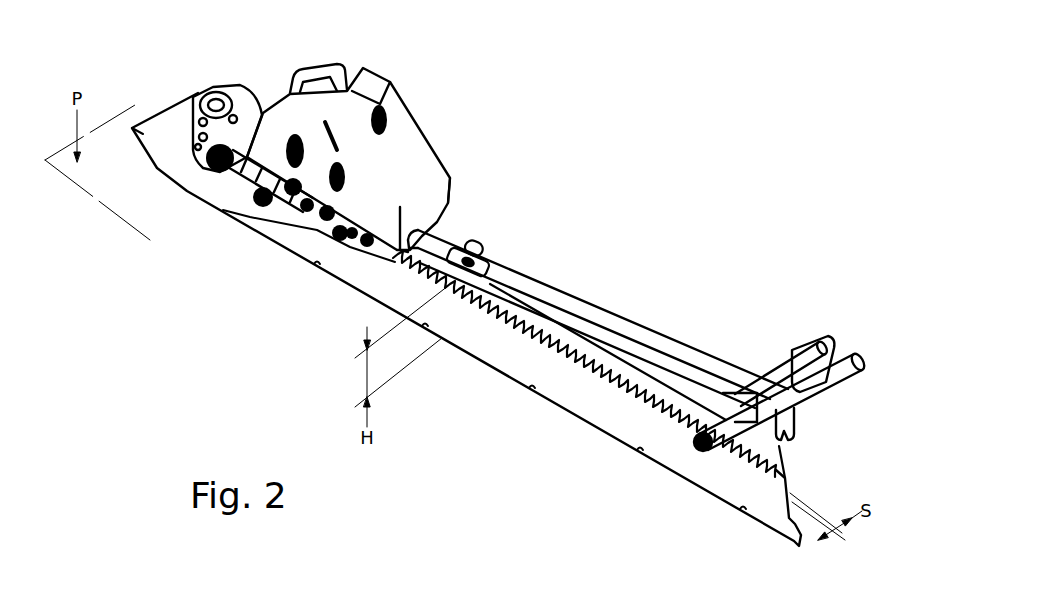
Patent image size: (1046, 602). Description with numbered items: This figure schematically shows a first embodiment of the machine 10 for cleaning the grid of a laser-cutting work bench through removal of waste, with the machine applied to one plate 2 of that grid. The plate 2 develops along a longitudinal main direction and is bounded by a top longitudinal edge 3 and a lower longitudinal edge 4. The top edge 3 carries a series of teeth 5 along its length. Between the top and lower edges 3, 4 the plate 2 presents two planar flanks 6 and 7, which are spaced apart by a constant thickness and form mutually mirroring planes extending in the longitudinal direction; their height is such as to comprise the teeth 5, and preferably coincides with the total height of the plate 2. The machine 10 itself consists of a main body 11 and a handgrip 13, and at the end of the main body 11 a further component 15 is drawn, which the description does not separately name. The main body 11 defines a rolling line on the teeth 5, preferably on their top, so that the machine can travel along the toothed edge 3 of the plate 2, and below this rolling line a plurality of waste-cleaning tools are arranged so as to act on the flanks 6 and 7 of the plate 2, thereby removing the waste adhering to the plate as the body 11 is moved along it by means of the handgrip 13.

The plate 2 is at (579, 418).
The top longitudinal edge 3 is at (666, 392).
The lower longitudinal edge 4 is at (665, 476).
The teeth 5 is at (525, 309).
The planar flank 6 is at (524, 366).
The planar flank 7 is at (564, 331).
The machine 10 is at (516, 157).
The main body 11 is at (416, 154).
The handgrip 13 is at (823, 332).
The gear housing 15 is at (230, 75).